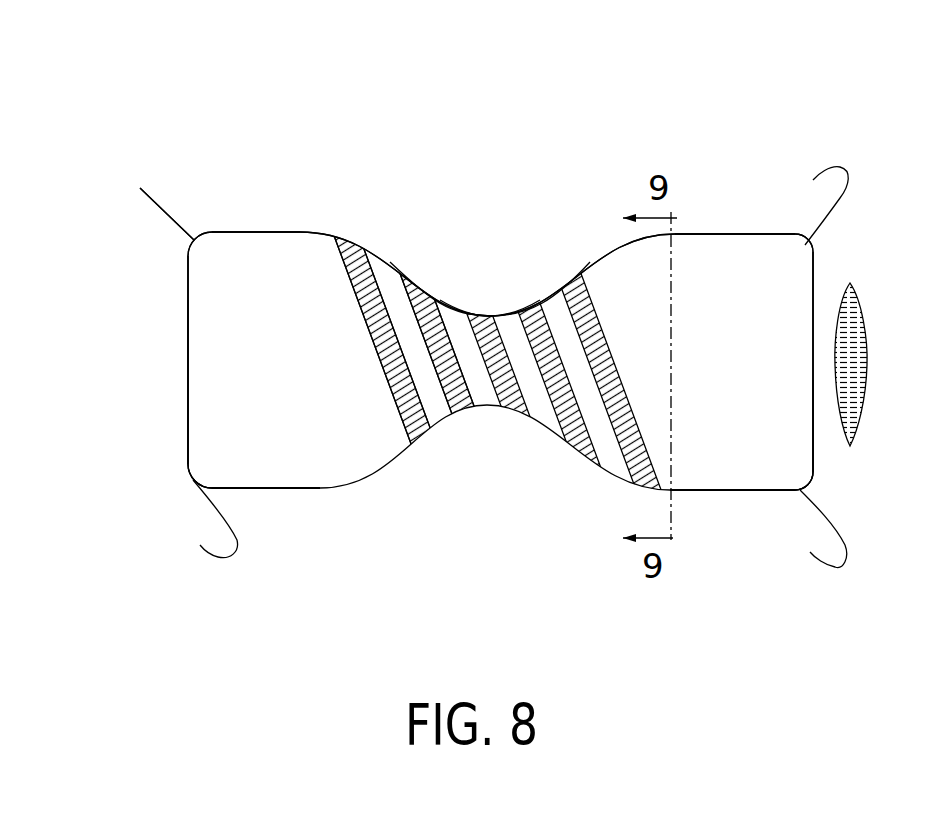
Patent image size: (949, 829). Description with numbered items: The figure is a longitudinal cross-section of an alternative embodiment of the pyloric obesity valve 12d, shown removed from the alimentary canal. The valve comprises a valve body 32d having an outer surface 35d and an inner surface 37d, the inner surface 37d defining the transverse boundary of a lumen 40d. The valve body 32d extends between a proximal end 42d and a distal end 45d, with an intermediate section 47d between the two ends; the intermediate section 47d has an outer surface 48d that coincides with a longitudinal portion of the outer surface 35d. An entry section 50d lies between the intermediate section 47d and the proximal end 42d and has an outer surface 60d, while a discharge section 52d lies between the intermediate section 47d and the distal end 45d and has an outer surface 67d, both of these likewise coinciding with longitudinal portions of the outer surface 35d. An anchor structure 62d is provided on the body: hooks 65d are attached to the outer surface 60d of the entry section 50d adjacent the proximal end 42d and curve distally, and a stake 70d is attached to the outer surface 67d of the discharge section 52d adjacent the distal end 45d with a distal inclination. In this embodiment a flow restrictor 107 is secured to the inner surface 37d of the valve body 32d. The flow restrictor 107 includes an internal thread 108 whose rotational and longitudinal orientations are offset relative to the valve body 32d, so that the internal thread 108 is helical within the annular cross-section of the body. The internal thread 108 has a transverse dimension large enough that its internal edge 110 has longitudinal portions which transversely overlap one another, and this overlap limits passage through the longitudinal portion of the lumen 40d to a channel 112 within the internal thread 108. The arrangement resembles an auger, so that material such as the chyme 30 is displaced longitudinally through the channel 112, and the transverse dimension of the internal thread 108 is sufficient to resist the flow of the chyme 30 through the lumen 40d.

The pyloric obesity valve 12d is at (746, 230).
The chyme 30 is at (860, 383).
The valve body 32d is at (729, 476).
The outer surface 35d is at (318, 226).
The inner surface 37d is at (225, 422).
The lumen 40d is at (693, 397).
The proximal end 42d is at (813, 272).
The distal end 45d is at (187, 318).
The intermediate section 47d is at (504, 311).
The outer surface of intermediate section 48d is at (445, 298).
The entry section 50d is at (742, 358).
The discharge section 52d is at (260, 351).
The outer surface of entry section 60d is at (758, 493).
The anchor structure 62d is at (171, 204).
The hook 65d is at (233, 553).
The outer surface of discharge section 67d is at (283, 490).
The stake 70d is at (153, 193).
The flow restrictor 107 is at (393, 282).
The internal thread 108 is at (438, 392).
The internal edge 110 is at (520, 373).
The channel 112 is at (562, 333).